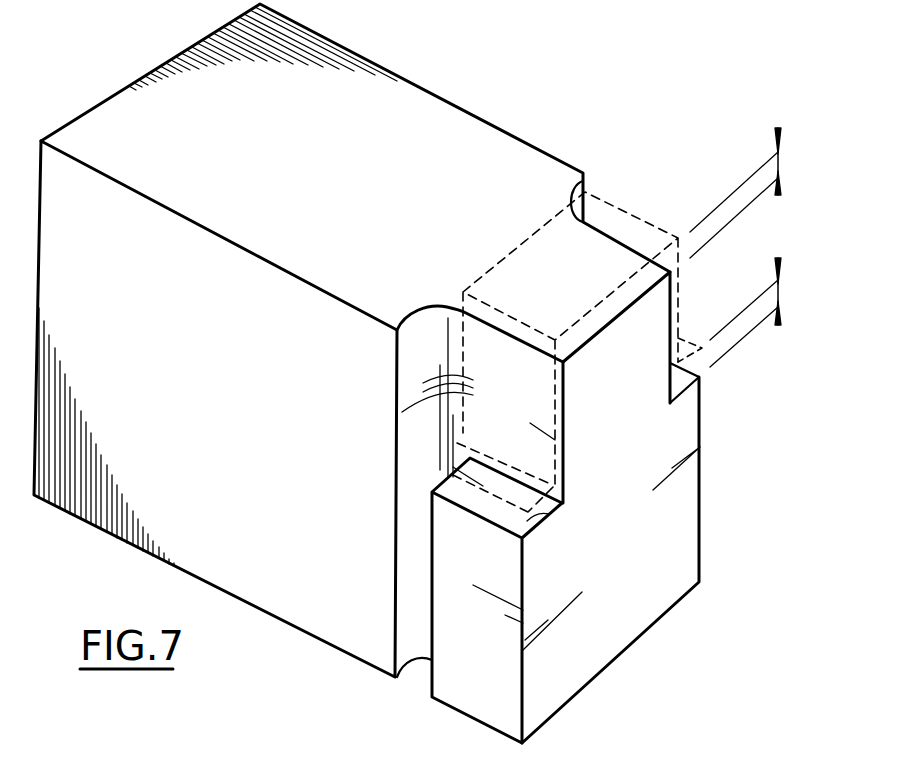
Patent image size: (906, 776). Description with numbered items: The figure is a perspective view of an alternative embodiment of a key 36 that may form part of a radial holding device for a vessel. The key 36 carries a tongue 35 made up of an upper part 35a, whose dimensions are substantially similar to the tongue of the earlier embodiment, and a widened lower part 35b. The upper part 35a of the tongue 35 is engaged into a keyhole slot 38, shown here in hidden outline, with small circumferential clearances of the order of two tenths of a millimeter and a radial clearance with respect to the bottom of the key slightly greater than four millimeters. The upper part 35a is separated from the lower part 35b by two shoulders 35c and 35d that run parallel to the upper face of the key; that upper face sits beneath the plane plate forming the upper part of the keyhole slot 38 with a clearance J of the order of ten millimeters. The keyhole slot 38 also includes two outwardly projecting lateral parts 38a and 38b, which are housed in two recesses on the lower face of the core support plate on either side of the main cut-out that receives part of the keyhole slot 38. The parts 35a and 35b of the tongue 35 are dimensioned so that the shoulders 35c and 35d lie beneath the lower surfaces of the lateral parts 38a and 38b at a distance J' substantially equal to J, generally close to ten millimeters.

The key 36 is at (458, 140).
The keyhole slot 38 is at (618, 228).
The outwardly projecting lateral part 38a is at (463, 467).
The outwardly projecting lateral part 38b is at (687, 340).
The tongue 35 is at (704, 528).
The upper part of the tongue 35a is at (602, 360).
The widened lower part of the tongue 35b is at (633, 607).
The shoulder 35c is at (547, 515).
The shoulder 35d is at (677, 382).